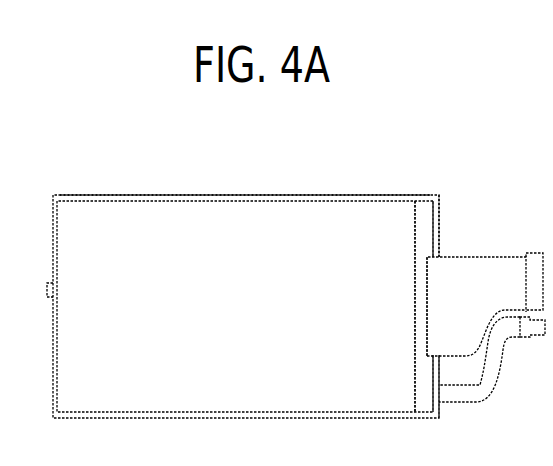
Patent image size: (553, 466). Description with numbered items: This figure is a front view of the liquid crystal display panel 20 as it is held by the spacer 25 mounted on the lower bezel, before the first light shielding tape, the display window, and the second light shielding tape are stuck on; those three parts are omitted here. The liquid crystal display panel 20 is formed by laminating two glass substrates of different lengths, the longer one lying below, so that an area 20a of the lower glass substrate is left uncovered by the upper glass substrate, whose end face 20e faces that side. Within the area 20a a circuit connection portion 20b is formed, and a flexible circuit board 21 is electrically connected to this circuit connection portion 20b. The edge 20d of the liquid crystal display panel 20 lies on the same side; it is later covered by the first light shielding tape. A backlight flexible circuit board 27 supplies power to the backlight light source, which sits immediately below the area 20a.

The liquid crystal display panel 20 is at (340, 223).
The spacer 25 is at (259, 195).
The end face of the upper glass substrate 20e is at (415, 196).
The area 20a is at (423, 229).
The edge of the liquid crystal display panel 20d is at (433, 392).
The circuit connection portion 20b is at (427, 322).
The flexible circuit board 21 is at (506, 273).
The backlight flexible circuit board 27 is at (497, 350).